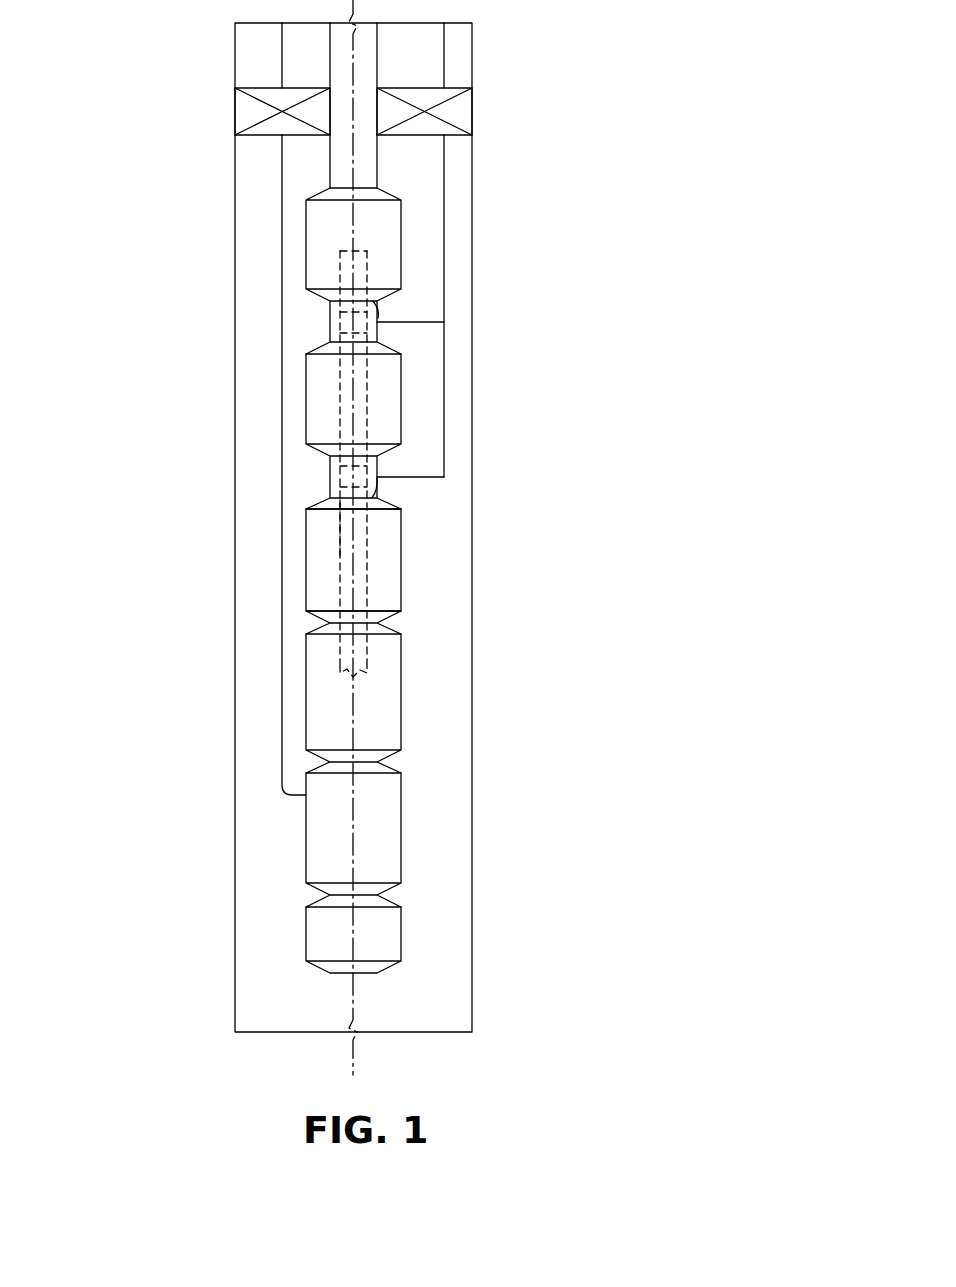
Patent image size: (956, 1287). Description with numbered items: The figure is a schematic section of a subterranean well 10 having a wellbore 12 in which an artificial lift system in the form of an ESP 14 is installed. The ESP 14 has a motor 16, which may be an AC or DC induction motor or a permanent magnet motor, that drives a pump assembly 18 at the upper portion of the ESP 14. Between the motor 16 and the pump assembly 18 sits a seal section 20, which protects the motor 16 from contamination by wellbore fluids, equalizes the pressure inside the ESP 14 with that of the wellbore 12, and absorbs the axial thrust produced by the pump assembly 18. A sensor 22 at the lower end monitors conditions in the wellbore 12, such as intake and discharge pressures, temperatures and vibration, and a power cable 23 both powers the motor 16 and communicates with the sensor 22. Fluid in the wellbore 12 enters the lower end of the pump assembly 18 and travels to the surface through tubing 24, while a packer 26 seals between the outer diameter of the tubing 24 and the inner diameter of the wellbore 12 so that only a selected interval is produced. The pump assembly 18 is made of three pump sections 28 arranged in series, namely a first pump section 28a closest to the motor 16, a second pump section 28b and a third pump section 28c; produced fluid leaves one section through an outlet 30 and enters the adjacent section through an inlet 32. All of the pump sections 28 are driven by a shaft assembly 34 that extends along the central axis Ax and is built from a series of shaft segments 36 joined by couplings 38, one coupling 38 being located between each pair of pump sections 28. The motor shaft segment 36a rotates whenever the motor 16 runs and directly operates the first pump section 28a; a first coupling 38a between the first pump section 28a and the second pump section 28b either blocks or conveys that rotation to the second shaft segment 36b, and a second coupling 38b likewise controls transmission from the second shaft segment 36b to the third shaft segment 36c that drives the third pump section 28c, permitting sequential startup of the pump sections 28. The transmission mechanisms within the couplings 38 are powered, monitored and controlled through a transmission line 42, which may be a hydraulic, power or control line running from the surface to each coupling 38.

The subterranean well 10 is at (636, 378).
The wellbore 12 is at (235, 850).
The ESP 14 is at (268, 606).
The motor 16 is at (401, 818).
The pump assembly 18 is at (493, 310).
The seal section 20 is at (401, 690).
The sensor 22 is at (401, 930).
The power cable 23 is at (282, 217).
The tubing 24 is at (328, 167).
The packer 26 is at (245, 105).
The pump section 28 is at (383, 570).
The first pump section 28a is at (401, 592).
The second pump section 28b is at (401, 395).
The third pump section 28c is at (401, 222).
The outlet 30 is at (380, 477).
The inlet 32 is at (378, 317).
The shaft assembly 34 is at (368, 542).
The shaft segment 36 is at (348, 648).
The motor shaft segment 36a is at (348, 557).
The second shaft segment 36b is at (347, 390).
The third shaft segment 36c is at (337, 280).
The coupling 38 is at (373, 328).
The first coupling 38a is at (340, 478).
The second coupling 38b is at (338, 323).
The transmission line 42 is at (444, 53).
The central axis Ax is at (353, 989).